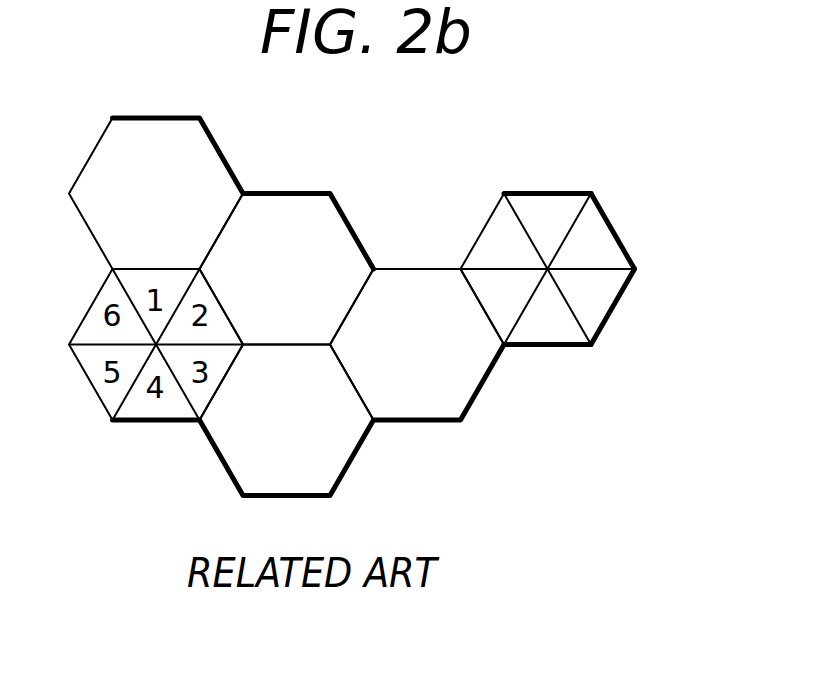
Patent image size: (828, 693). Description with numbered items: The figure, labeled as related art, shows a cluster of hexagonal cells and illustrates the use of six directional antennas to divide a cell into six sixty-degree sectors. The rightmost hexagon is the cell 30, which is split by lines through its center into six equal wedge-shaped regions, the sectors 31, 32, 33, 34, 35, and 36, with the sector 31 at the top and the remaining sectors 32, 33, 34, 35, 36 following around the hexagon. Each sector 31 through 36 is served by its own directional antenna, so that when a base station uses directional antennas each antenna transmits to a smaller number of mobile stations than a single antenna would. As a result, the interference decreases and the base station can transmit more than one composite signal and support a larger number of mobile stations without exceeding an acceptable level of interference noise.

The cell 30 is at (536, 263).
The sector 31 is at (563, 206).
The sector 32 is at (610, 232).
The sector 33 is at (608, 300).
The sector 34 is at (545, 347).
The sector 35 is at (488, 305).
The sector 36 is at (487, 235).